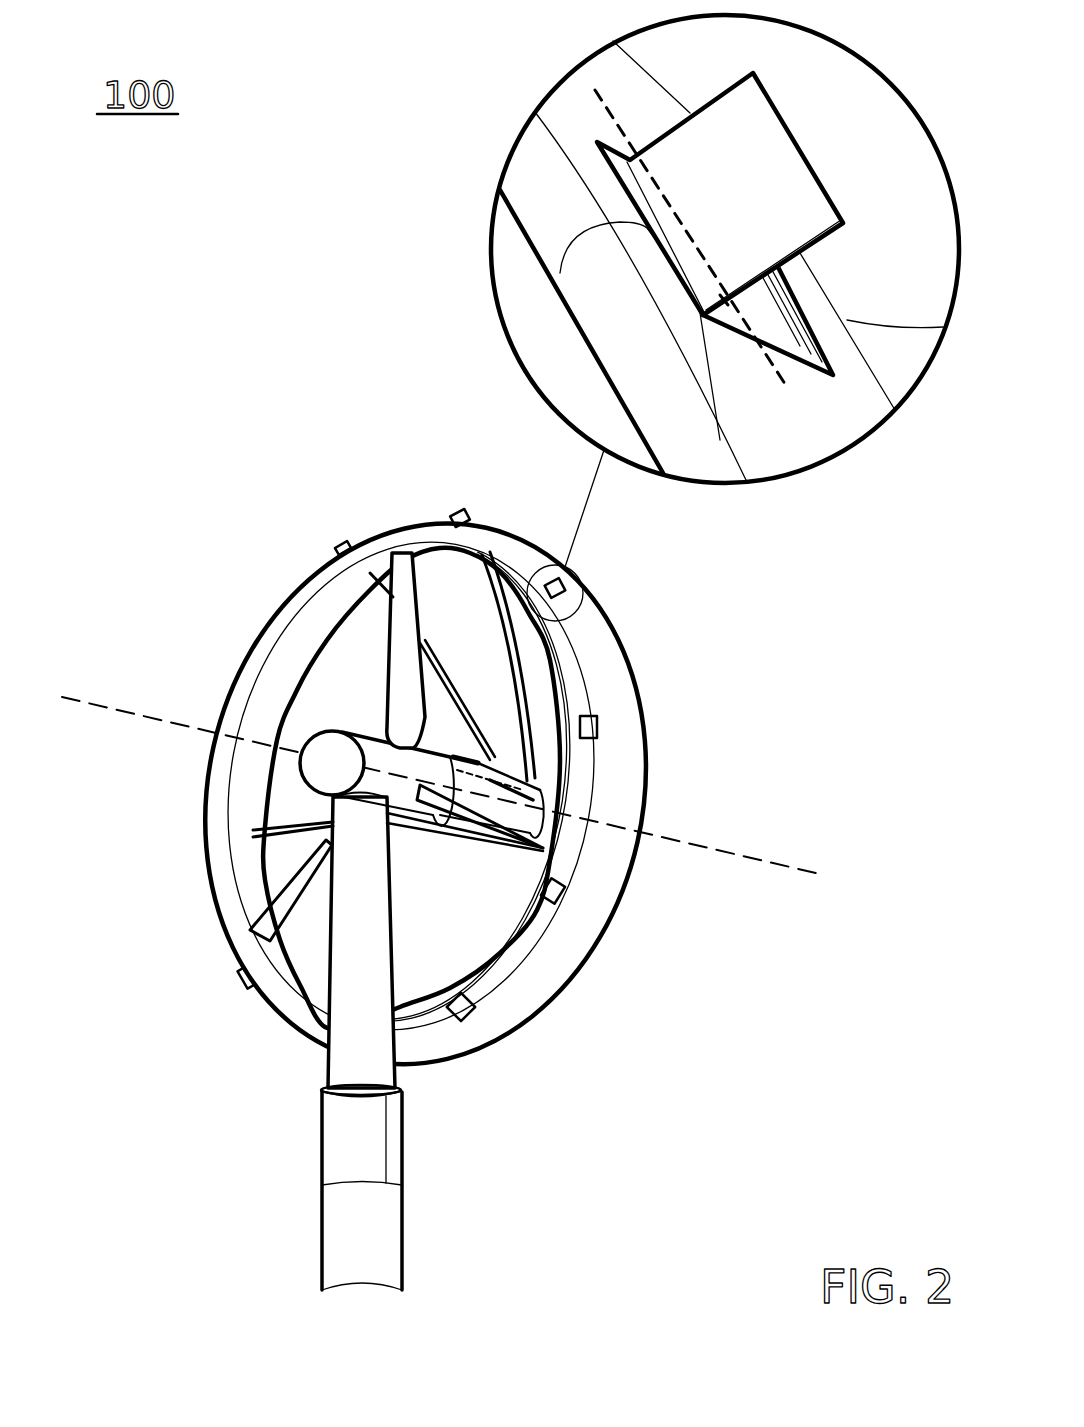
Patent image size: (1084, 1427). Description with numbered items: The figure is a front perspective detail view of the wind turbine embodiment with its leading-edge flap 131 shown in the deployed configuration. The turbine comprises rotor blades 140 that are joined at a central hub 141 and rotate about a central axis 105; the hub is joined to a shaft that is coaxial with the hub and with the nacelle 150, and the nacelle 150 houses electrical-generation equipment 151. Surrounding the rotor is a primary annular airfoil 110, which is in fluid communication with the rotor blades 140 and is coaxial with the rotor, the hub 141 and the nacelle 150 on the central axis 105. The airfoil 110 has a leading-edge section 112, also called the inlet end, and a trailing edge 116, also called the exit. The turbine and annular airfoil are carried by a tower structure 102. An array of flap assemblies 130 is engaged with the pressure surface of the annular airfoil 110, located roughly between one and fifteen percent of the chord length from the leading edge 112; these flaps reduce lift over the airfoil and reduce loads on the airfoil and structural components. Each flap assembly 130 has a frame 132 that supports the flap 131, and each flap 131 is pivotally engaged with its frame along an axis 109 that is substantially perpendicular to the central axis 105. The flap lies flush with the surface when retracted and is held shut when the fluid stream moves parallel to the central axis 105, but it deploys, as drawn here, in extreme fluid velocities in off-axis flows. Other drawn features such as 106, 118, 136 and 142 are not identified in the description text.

The tower structure 102 is at (392, 1252).
The central axis 105 is at (118, 710).
The inner ring 106 is at (480, 587).
The axis 109 is at (597, 92).
The primary airfoil 110 is at (205, 987).
The leading-edge section 112 is at (565, 228).
The trailing edge 116 is at (655, 670).
The tower joint 118 is at (400, 1110).
The flap assembly 130 is at (580, 157).
The leading-edge flap 131 is at (680, 168).
The frame 132 is at (703, 315).
The tower upper section 136 is at (360, 1027).
The rotor blades 140 is at (410, 578).
The central hub 141 is at (330, 750).
The spoke 142 is at (365, 656).
The nacelle 150 is at (405, 795).
The electrical-generation equipment 151 is at (540, 797).